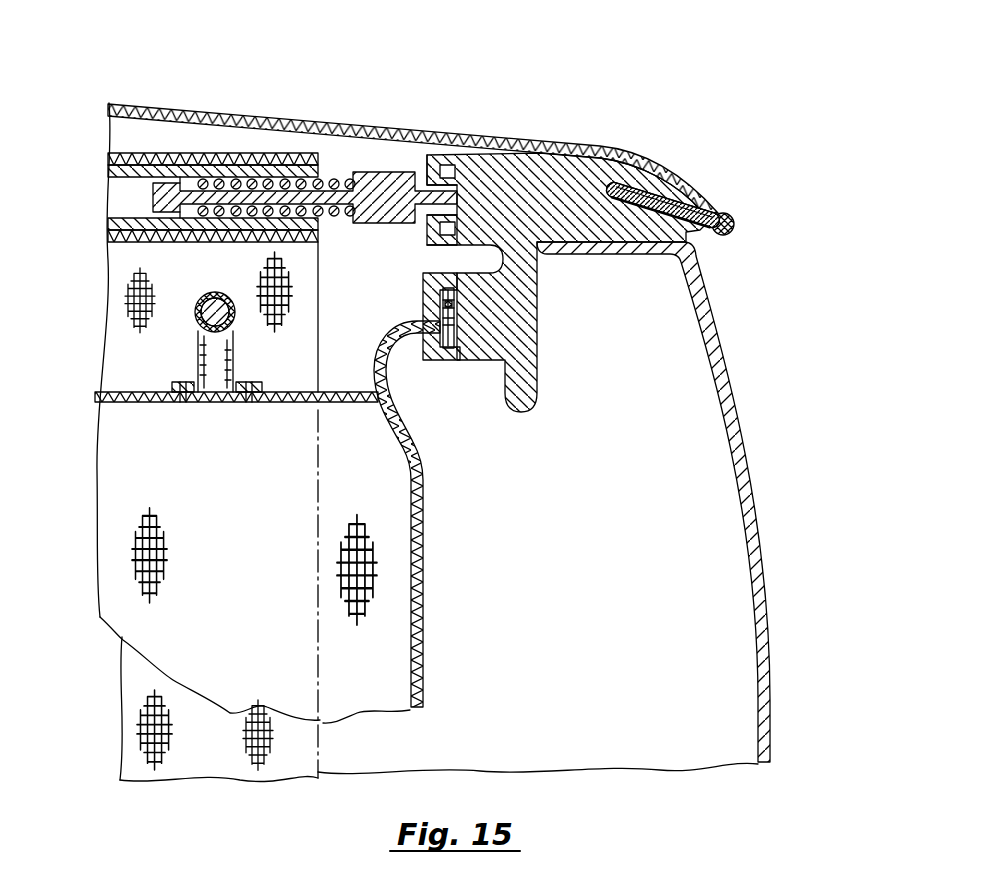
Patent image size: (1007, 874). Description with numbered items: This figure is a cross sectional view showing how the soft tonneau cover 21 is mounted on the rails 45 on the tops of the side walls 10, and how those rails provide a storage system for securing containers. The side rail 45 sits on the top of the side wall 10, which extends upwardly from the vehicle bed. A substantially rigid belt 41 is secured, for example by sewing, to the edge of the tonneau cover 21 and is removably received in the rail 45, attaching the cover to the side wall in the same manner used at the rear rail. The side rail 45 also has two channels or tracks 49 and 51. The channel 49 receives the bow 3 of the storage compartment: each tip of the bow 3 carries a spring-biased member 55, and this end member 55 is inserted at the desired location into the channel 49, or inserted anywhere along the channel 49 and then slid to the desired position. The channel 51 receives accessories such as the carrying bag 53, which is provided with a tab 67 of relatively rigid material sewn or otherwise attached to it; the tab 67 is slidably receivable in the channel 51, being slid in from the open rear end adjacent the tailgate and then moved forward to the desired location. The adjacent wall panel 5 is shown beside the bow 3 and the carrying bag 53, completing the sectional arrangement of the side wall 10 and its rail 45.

The bow 3 is at (128, 218).
The wall panel 5 is at (145, 292).
The side wall 10 is at (762, 468).
The soft tonneau cover 21 is at (357, 129).
The belt 41 is at (692, 182).
The side rail 45 is at (573, 180).
The channel 49 is at (447, 168).
The channel 51 is at (450, 288).
The carrying bag 53 is at (425, 579).
The spring-biased member 55 is at (465, 185).
The tab 67 is at (457, 360).